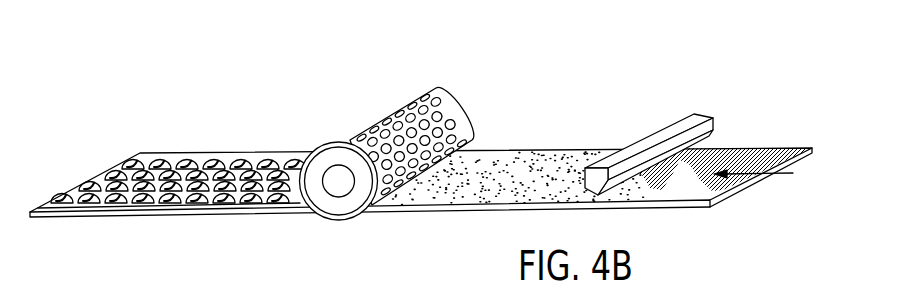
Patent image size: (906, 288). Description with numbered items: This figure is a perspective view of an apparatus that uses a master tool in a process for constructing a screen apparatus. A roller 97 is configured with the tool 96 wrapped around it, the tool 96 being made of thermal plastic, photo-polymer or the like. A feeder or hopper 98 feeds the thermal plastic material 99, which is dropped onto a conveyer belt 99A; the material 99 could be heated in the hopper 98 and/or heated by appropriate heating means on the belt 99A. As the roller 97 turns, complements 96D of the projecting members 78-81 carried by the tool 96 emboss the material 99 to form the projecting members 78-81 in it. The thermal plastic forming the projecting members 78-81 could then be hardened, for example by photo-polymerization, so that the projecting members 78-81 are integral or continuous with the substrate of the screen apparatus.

The projecting members 78-81 is at (190, 160).
The tool 96 is at (363, 123).
The complements of the projecting members 96D is at (423, 92).
The roller 97 is at (338, 208).
The feeder or hopper 98 is at (697, 118).
The thermal plastic material 99 is at (492, 186).
The conveyer belt 99A is at (674, 212).